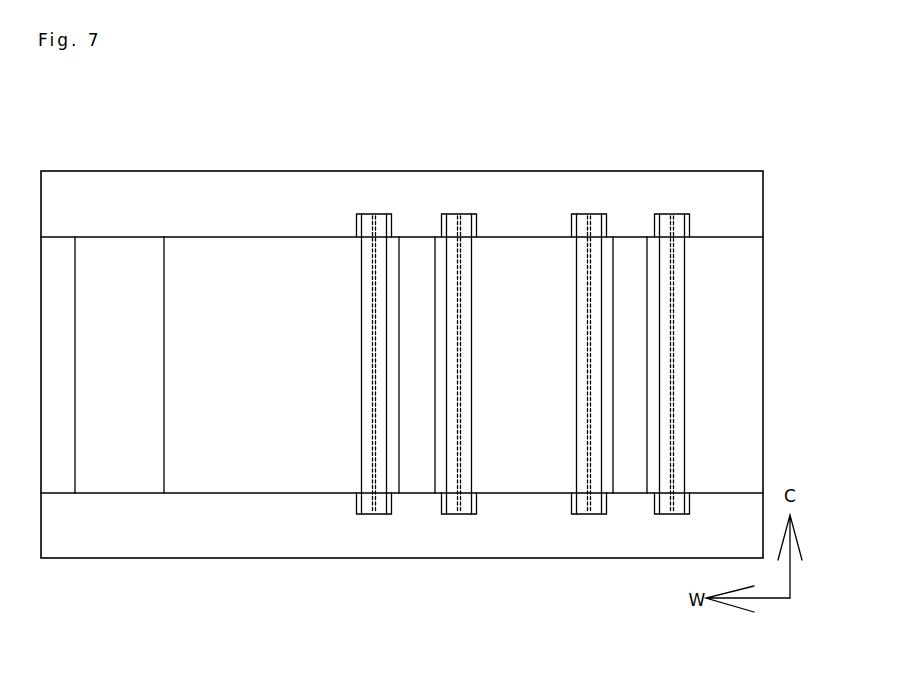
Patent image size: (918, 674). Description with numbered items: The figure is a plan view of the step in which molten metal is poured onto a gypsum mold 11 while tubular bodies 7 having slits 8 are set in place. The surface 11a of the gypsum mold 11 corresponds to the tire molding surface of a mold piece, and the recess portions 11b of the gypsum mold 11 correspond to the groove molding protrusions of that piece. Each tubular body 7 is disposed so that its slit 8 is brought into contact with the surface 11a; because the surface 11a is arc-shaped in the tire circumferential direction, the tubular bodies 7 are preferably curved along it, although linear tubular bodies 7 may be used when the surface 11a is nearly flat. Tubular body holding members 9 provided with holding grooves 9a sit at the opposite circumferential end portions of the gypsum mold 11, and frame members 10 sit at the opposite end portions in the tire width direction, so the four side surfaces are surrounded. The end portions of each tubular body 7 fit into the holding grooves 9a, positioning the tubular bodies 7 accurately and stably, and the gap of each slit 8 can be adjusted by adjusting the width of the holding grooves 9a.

The tubular body 7 is at (369, 368).
The slit 8 is at (373, 413).
The tubular body holding member 9 is at (215, 172).
The holding groove 9a is at (358, 232).
The frame member 10 is at (60, 482).
The gypsum mold 11 is at (124, 234).
The surface of the gypsum mold 11a is at (290, 262).
The recess portion 11b is at (415, 248).